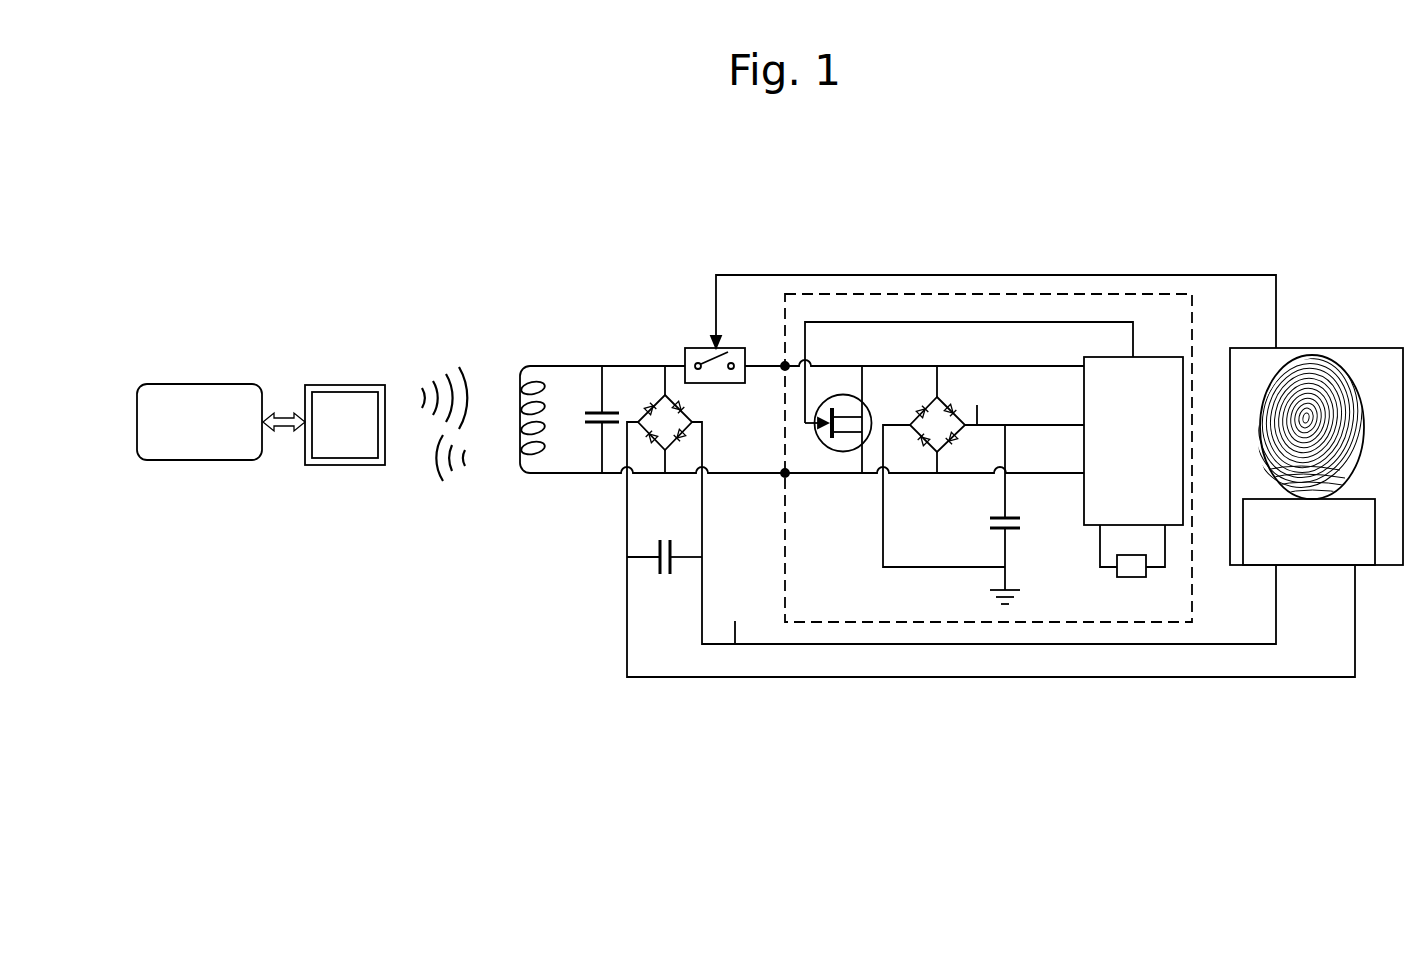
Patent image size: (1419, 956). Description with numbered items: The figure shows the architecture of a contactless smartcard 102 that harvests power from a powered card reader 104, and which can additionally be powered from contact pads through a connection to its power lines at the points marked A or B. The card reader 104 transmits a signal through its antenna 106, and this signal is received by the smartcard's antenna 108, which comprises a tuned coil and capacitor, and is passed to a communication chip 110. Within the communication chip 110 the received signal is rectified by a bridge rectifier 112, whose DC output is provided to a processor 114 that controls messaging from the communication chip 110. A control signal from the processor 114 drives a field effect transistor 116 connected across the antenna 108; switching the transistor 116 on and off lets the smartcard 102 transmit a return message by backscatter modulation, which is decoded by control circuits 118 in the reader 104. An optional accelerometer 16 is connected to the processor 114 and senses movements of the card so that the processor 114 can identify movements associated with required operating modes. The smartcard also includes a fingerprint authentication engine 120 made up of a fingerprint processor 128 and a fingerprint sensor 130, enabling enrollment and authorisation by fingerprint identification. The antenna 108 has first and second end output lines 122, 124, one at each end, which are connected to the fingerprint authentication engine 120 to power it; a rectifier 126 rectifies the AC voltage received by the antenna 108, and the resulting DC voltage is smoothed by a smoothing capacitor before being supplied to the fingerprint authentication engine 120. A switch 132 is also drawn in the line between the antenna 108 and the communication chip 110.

The contactless smartcard 102 is at (1124, 166).
The powered card reader 104 is at (287, 285).
The antenna 106 is at (343, 467).
The antenna 108 is at (520, 394).
The communication chip 110 is at (872, 294).
The bridge rectifier 112 is at (925, 452).
The processor 114 is at (1163, 357).
The field effect transistor 116 is at (833, 395).
The control circuits 118 is at (195, 462).
The fingerprint authentication engine 120 is at (1305, 347).
The first end output line 122 is at (550, 362).
The second end output line 124 is at (552, 480).
The rectifier 126 is at (660, 400).
The fingerprint processor 128 is at (1318, 550).
The fingerprint sensor 130 is at (1345, 366).
The switch 132 is at (700, 346).
The accelerometer 16 is at (1126, 579).